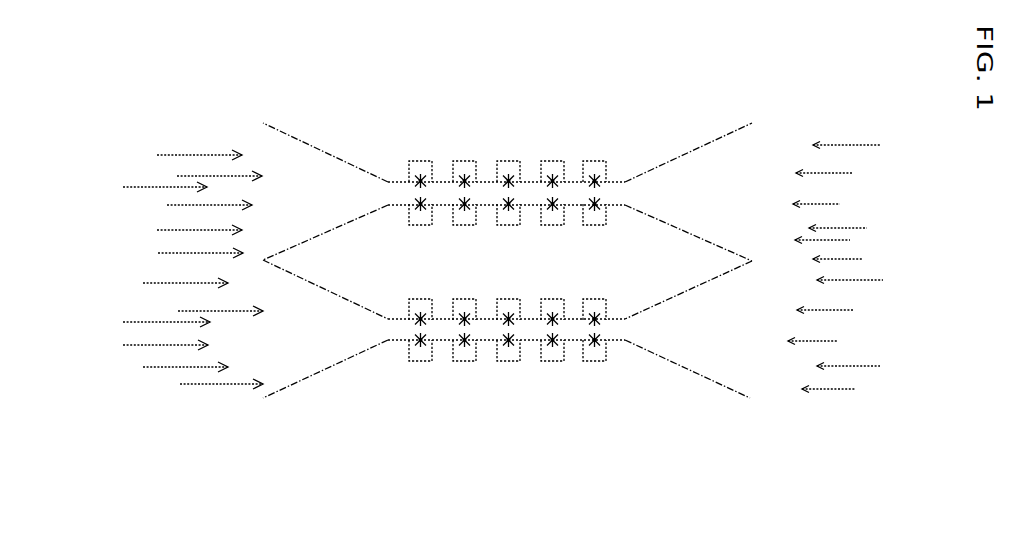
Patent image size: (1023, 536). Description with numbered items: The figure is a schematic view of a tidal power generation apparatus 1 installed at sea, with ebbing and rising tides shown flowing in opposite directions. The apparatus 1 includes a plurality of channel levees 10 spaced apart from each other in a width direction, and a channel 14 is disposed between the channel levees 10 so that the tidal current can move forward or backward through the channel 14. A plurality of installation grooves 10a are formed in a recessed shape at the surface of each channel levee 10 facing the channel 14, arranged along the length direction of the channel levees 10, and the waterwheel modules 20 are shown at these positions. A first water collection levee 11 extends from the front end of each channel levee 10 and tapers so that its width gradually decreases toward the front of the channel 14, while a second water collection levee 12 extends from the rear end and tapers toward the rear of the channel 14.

The tidal power generation apparatus 1 is at (269, 58).
The channel levee 10 is at (503, 262).
The installation groove 10a is at (420, 226).
The first water collection levee 11 is at (670, 275).
The second water collection levee 12 is at (318, 270).
The channel 14 is at (527, 191).
The waterwheel module 20 is at (417, 203).